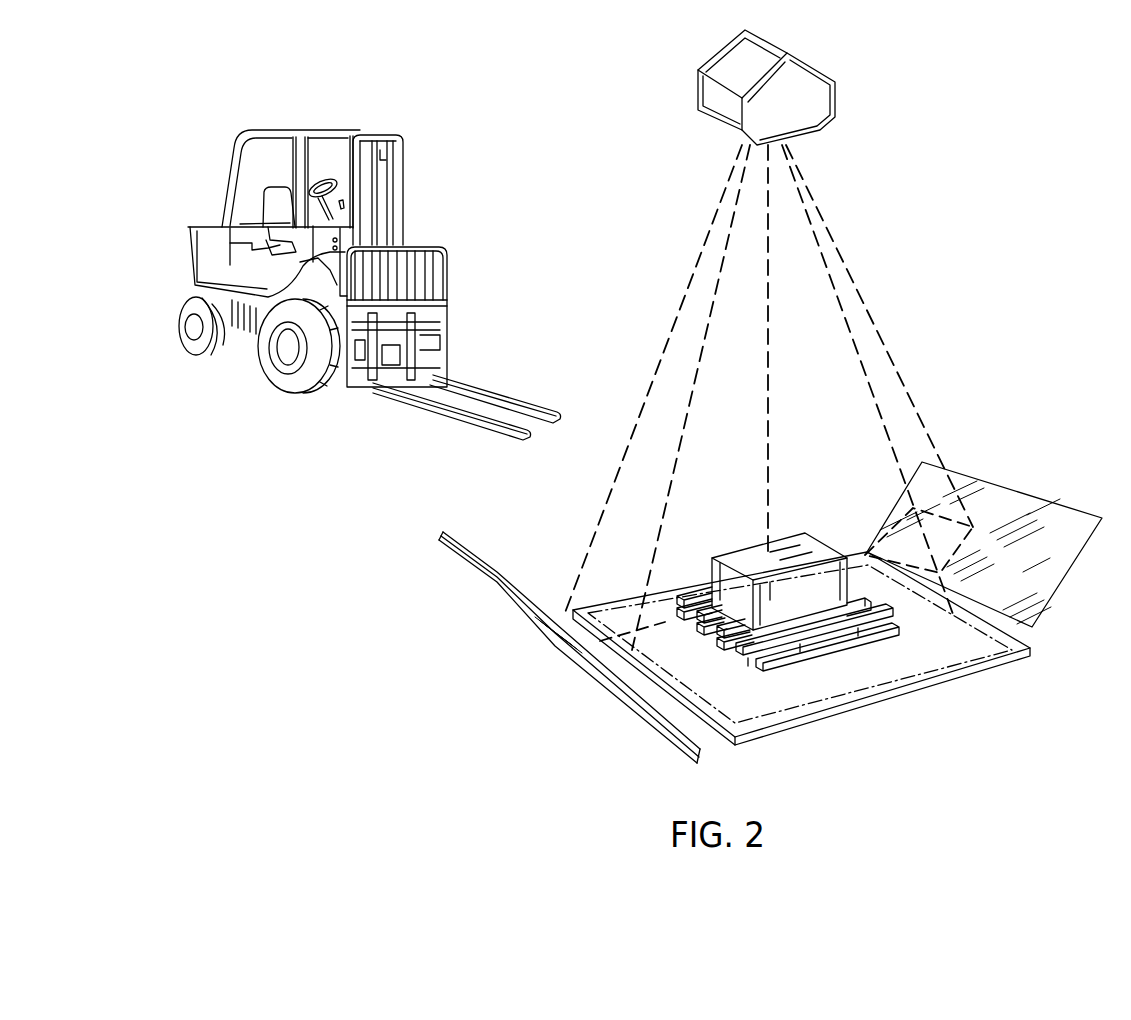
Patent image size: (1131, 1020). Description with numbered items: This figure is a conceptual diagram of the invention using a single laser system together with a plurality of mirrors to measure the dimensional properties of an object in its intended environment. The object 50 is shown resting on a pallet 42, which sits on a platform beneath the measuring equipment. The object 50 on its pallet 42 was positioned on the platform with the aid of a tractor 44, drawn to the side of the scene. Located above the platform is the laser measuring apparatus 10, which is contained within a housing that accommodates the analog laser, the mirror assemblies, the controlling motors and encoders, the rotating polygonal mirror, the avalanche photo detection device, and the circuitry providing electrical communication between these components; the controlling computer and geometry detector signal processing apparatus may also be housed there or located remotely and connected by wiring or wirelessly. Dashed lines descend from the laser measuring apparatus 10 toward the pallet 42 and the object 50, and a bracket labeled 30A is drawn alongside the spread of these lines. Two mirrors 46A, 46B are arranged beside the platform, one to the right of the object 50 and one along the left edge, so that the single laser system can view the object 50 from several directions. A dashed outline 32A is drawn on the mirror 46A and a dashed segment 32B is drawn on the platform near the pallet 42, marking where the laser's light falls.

The laser measuring apparatus 10 is at (816, 56).
The tractor 44 is at (366, 106).
The light beam / field of view 30A is at (828, 180).
The pallet 42 is at (845, 652).
The object 50 is at (738, 560).
The projected pattern region on reference panel 32A is at (893, 546).
The projected pattern line on platform 32B is at (667, 624).
The mirror 46A is at (1038, 497).
The mirror 46B is at (568, 652).